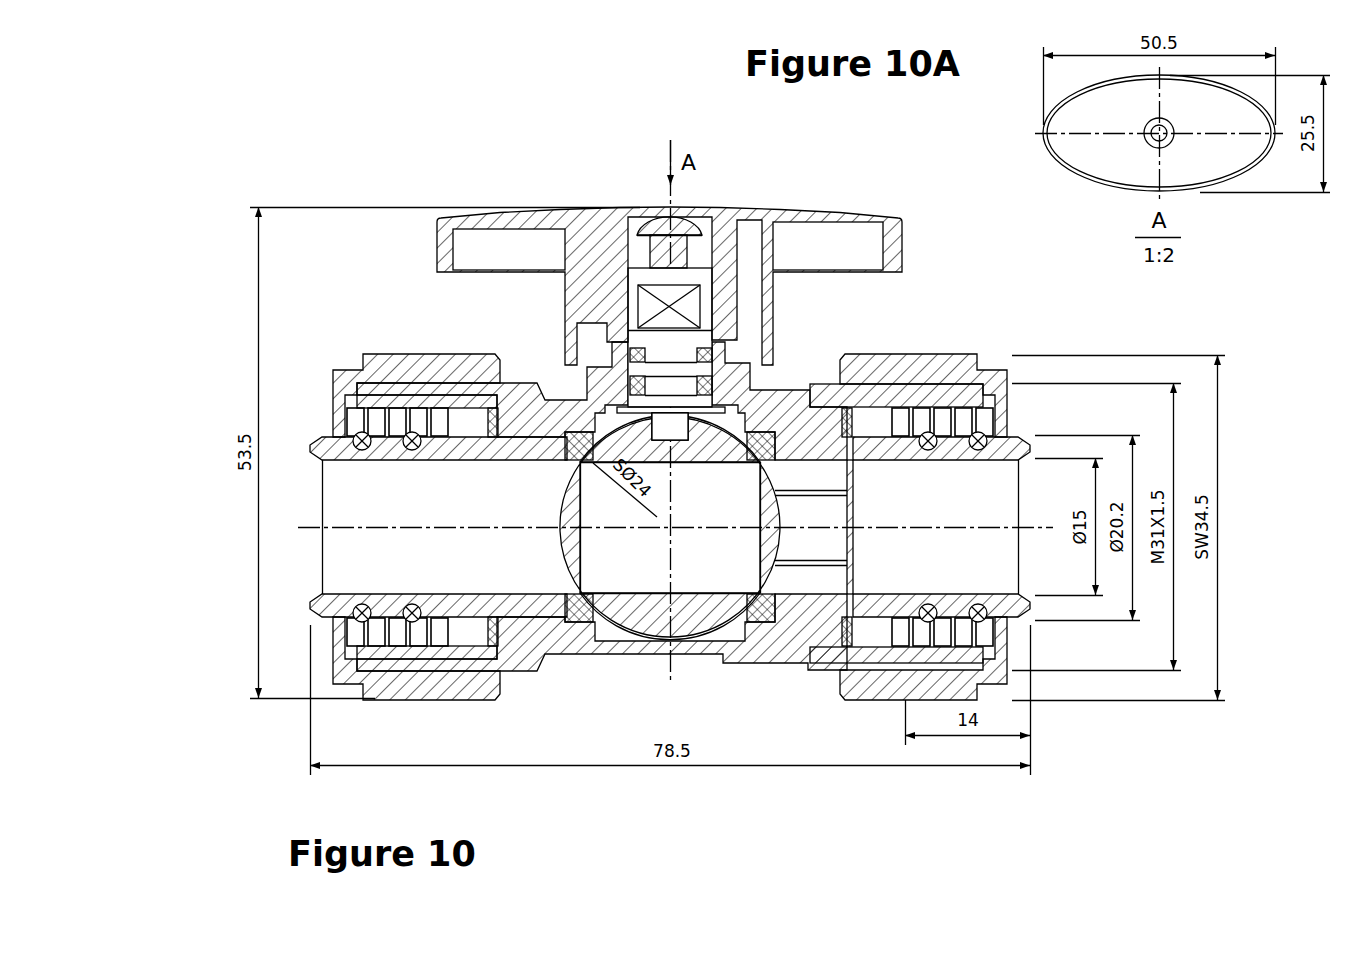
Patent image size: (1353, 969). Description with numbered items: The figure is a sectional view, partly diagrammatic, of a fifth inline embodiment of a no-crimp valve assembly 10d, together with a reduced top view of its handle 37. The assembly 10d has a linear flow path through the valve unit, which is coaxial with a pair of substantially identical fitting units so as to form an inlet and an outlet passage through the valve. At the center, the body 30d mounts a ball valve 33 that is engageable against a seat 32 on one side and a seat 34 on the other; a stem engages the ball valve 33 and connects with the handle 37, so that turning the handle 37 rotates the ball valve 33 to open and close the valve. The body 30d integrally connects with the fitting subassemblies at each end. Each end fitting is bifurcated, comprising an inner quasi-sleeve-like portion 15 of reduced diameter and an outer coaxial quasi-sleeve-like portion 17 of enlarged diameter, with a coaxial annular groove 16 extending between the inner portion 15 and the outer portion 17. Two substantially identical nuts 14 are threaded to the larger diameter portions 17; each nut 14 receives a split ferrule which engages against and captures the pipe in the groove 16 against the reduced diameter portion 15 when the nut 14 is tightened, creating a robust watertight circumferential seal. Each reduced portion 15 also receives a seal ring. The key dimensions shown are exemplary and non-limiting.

In FIG. 10, the inline valve assembly 10d is at (608, 162).
In FIG. 10, the nut 14 is at (378, 356).
In FIG. 10, the inner quasi-sleeve-like portion 15 is at (443, 598).
In FIG. 10, the coaxial annular groove 16 is at (465, 396).
In FIG. 10, the outer quasi-sleeve-like portion 17 is at (884, 415).
In FIG. 10, the body 30d is at (763, 653).
In FIG. 10, the seat 32 is at (586, 624).
In FIG. 10, the ball valve 33 is at (603, 440).
In FIG. 10, the seat 34 is at (745, 613).
In FIG. 10, the handle 37 is at (845, 217).
In FIG. 10A, the handle 37 is at (1102, 108).